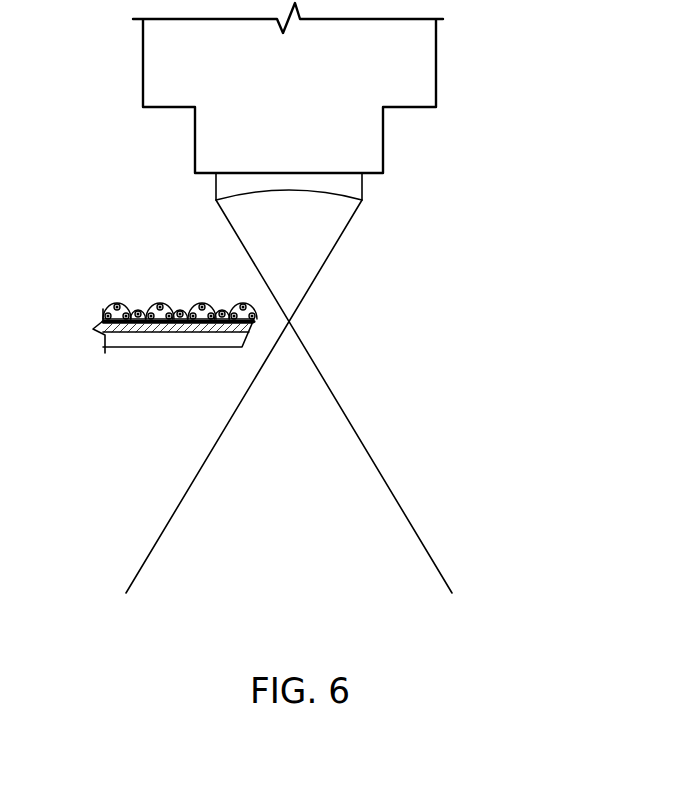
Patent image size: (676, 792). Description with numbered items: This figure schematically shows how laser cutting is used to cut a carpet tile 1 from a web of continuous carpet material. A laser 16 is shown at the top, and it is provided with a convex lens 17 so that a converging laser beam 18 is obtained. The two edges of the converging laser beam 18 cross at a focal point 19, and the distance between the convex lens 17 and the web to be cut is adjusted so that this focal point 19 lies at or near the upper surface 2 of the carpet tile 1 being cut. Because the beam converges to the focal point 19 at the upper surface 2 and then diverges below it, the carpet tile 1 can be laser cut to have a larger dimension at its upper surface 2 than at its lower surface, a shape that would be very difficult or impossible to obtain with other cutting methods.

The carpet tile 1 is at (101, 297).
The upper surface 2 is at (160, 299).
The laser 16 is at (456, 63).
The convex lens 17 is at (350, 185).
The converging laser beam 18 is at (315, 252).
The focal point 19 is at (310, 317).